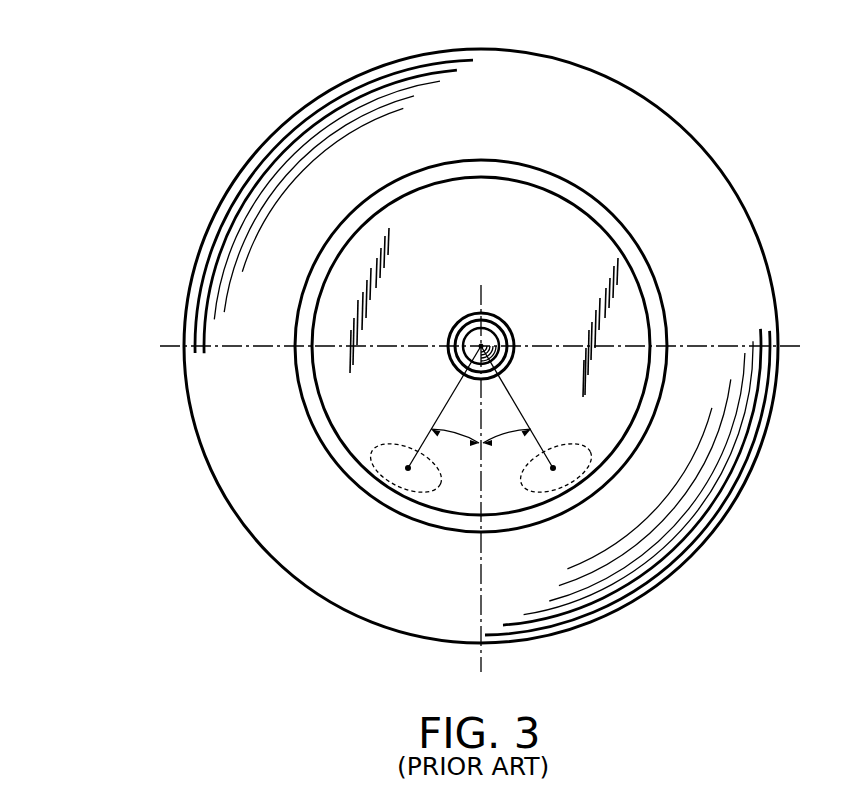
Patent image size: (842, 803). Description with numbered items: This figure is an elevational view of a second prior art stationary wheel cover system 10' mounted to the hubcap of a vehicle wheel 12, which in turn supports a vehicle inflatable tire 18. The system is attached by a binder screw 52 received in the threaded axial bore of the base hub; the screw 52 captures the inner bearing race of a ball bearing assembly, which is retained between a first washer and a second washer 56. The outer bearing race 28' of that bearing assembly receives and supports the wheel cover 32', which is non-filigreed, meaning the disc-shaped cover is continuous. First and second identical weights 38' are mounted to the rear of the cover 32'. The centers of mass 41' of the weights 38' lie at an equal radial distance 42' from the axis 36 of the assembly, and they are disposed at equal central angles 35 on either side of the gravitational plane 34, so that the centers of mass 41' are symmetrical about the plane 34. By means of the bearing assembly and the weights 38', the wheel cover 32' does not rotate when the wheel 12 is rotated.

The vehicle inflatable tire 18 is at (747, 208).
The vehicle wheel 12 is at (667, 307).
The wheel cover 32' is at (481, 346).
The stationary wheel cover system 10' is at (486, 346).
The gravitational plane 34 is at (481, 664).
The outer bearing race 28' is at (483, 315).
The second washer 56 is at (510, 327).
The binder screw 52 is at (514, 341).
The axis 36 is at (481, 346).
The radial distance 42' is at (483, 407).
The centers of mass 41' is at (481, 436).
The weights 38' is at (485, 443).
The central angles 35 is at (447, 441).